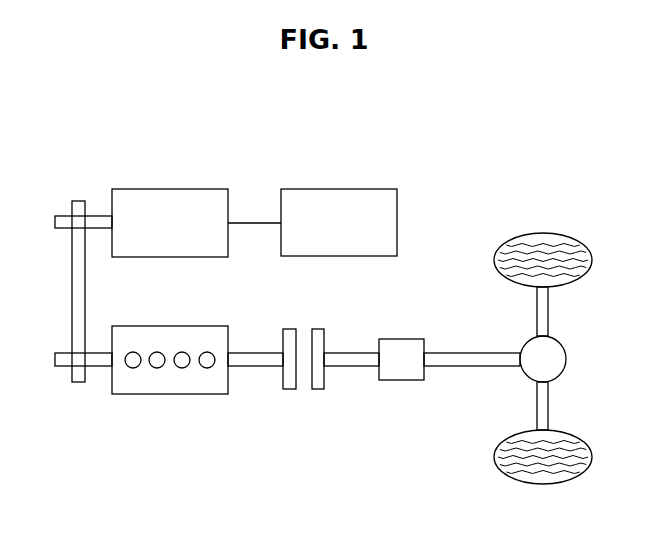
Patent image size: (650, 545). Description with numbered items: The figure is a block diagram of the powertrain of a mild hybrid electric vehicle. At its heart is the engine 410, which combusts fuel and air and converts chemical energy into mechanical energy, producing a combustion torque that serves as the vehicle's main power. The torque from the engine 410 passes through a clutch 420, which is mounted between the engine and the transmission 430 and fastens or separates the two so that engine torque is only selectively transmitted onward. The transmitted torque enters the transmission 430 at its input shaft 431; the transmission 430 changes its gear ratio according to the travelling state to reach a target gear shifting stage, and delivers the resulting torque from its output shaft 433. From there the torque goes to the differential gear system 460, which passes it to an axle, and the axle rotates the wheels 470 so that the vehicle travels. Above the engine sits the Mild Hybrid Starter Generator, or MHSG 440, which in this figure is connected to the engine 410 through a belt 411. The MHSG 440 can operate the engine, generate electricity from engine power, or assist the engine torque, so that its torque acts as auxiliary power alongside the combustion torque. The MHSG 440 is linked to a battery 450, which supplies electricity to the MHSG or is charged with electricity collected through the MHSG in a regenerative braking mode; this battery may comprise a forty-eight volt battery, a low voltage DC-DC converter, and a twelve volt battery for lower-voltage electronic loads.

The engine 410 is at (165, 326).
The belt 411 is at (73, 285).
The clutch 420 is at (304, 326).
The transmission 430 is at (400, 339).
The input shaft 431 is at (353, 368).
The output shaft 433 is at (463, 368).
The Mild Hybrid Starter Generator (MHSG) 440 is at (165, 189).
The battery 450 is at (335, 189).
The differential gear system 460 is at (567, 358).
The wheels 470 is at (542, 233).